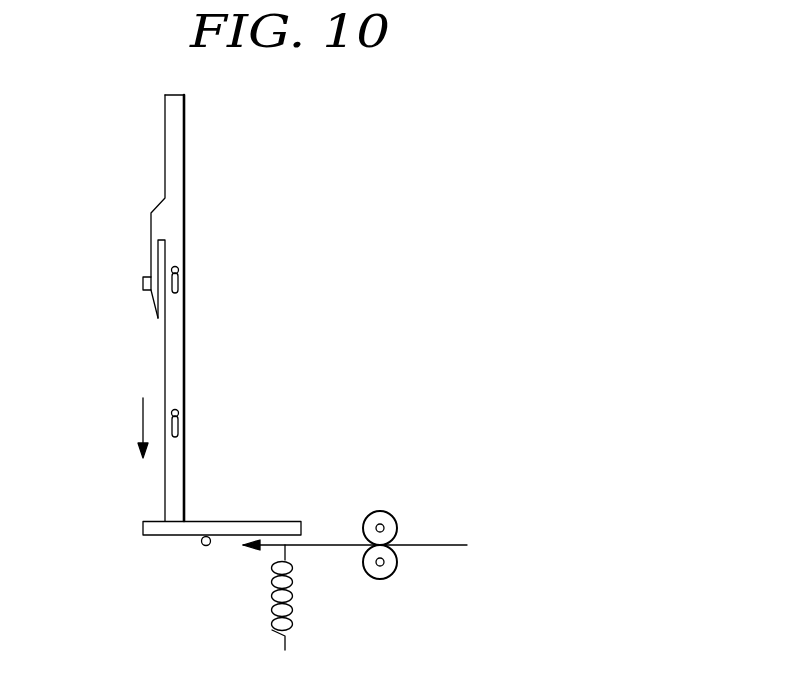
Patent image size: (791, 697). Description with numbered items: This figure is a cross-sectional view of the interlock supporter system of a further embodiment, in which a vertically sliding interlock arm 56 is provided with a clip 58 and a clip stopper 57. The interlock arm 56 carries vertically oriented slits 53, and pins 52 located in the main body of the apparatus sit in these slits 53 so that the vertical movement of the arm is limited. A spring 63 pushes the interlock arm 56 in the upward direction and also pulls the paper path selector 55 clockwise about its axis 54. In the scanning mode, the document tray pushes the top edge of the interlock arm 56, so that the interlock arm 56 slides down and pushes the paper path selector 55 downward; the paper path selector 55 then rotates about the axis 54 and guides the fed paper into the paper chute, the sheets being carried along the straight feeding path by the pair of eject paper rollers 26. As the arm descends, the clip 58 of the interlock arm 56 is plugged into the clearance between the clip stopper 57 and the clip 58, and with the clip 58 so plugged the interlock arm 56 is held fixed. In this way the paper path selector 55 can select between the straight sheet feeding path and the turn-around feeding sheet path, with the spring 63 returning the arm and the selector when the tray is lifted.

The eject paper rollers 26 is at (395, 513).
The pins 52 is at (178, 270).
The slits 53 is at (178, 290).
The axis 54 is at (202, 547).
The paper path selector 55 is at (268, 520).
The interlock arm 56 is at (184, 200).
The clip stopper 57 is at (143, 281).
The clip 58 is at (146, 302).
The spring 63 is at (293, 597).